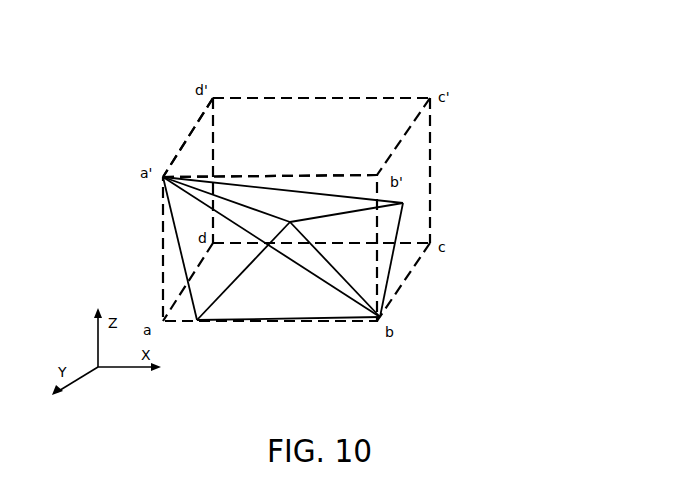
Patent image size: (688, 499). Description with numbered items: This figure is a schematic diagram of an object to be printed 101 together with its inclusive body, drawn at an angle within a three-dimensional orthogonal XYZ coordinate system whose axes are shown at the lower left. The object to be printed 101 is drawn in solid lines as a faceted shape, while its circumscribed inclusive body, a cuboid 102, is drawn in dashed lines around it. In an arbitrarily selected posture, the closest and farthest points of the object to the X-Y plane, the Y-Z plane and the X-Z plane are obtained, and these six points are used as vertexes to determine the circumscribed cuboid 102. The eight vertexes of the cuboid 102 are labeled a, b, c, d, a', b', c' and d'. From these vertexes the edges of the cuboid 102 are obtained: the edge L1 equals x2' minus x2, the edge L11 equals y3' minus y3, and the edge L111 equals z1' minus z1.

The object to be printed 101 is at (225, 260).
The cuboid 102 is at (320, 147).
The edge of the cuboid L1 is at (283, 97).
The edge of the cuboid L11 is at (387, 157).
The edge of the cuboid L111 is at (430, 187).